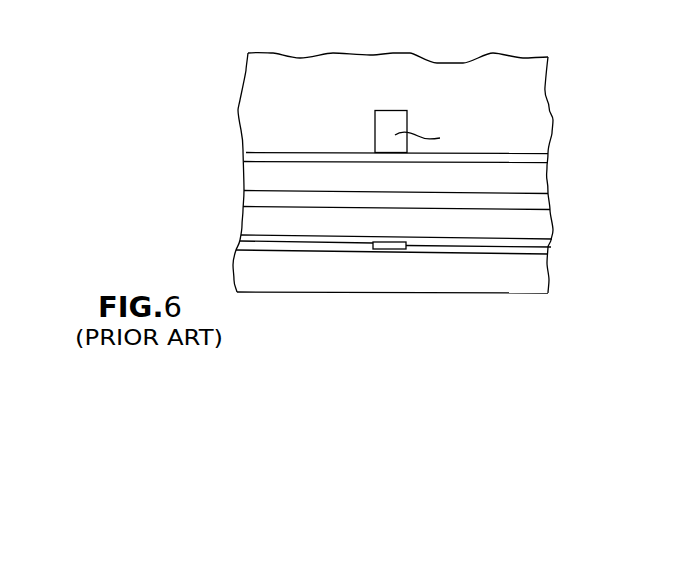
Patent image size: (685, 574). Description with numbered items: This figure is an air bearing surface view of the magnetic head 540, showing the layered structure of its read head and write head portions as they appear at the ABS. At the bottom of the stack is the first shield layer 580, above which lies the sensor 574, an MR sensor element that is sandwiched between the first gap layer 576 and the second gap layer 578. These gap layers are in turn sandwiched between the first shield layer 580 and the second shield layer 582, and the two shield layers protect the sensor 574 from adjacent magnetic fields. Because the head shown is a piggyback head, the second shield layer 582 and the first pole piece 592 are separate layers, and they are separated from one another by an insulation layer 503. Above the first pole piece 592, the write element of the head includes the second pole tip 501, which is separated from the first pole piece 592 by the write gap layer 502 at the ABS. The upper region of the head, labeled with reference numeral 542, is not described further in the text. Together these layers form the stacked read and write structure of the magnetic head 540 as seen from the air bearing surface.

The magnetic head 540 is at (568, 72).
The overcoat layer 542 is at (252, 82).
The second pole tip 501 is at (388, 120).
The write gap layer 502 is at (311, 152).
The insulation layer 503 is at (540, 203).
The first pole piece 592 is at (252, 173).
The second shield layer 582 is at (245, 223).
The first shield layer 580 is at (538, 277).
The sensor 574 is at (387, 250).
The first gap layer 576 is at (300, 252).
The second gap layer 578 is at (508, 242).